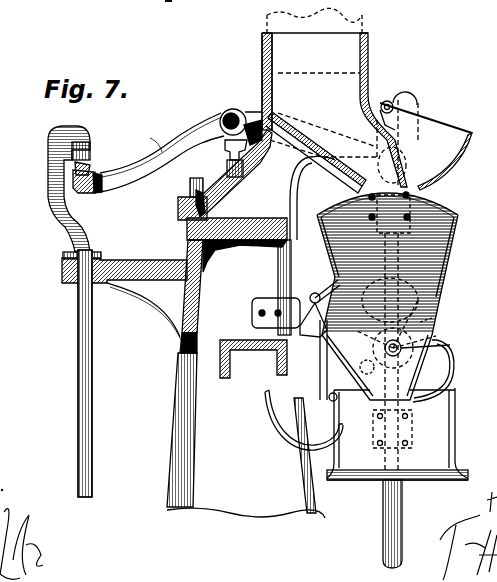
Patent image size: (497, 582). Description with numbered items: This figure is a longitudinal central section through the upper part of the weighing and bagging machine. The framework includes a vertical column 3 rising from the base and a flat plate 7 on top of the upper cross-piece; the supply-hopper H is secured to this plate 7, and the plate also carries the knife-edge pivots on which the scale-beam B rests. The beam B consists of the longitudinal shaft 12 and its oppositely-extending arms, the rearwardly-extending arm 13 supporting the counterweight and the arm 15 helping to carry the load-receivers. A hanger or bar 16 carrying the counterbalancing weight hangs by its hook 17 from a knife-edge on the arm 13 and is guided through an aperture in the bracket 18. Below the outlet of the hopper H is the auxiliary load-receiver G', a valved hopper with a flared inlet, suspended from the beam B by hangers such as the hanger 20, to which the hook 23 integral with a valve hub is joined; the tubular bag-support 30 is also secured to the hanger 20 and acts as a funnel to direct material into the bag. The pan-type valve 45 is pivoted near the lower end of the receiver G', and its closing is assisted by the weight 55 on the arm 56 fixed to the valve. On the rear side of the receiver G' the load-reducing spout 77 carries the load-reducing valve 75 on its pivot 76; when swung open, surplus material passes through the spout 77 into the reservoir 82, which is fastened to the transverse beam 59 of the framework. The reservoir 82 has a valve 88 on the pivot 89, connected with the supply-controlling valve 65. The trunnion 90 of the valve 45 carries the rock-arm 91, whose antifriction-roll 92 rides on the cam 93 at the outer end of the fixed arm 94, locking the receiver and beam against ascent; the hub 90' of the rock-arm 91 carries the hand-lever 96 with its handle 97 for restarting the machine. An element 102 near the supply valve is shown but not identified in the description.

The vertical column 3 is at (172, 395).
The flat plate 7 is at (178, 209).
The longitudinal shaft 12 is at (228, 110).
The rearwardly-extending arm 13 is at (160, 150).
The beam arm 15 is at (259, 108).
The hanger or bar 16 is at (80, 340).
The hook 17 is at (50, 187).
The lug or bracket 18 is at (62, 276).
The hanger 20 is at (385, 521).
The hook 23 is at (414, 98).
The bag-support 30 is at (457, 446).
The valve 45 is at (454, 366).
The closing device or weight 55 is at (396, 290).
The arm 56 is at (437, 337).
The transverse beam 59 is at (192, 350).
The supply-controlling valve 65 is at (466, 146).
The load-reducing valve 75 is at (268, 358).
The pivot 76 is at (313, 296).
The load-reducing spout 77 is at (318, 292).
The reservoir 82 is at (293, 390).
The valve 88 is at (295, 415).
The pivot 89 is at (337, 400).
The projecting pin or trunnion 90 is at (385, 334).
The hub 90' is at (443, 346).
The rock-arm 91 is at (367, 358).
The antifriction-roll 92 is at (376, 410).
The cam 93 is at (430, 321).
The arm 94 is at (270, 300).
The hand-lever 96 is at (428, 257).
The handle 97 is at (445, 222).
The pivot 102 is at (389, 100).
The scale-beam B is at (177, 147).
The auxiliary load-receiver G' is at (397, 296).
The supply-hopper H is at (315, 40).